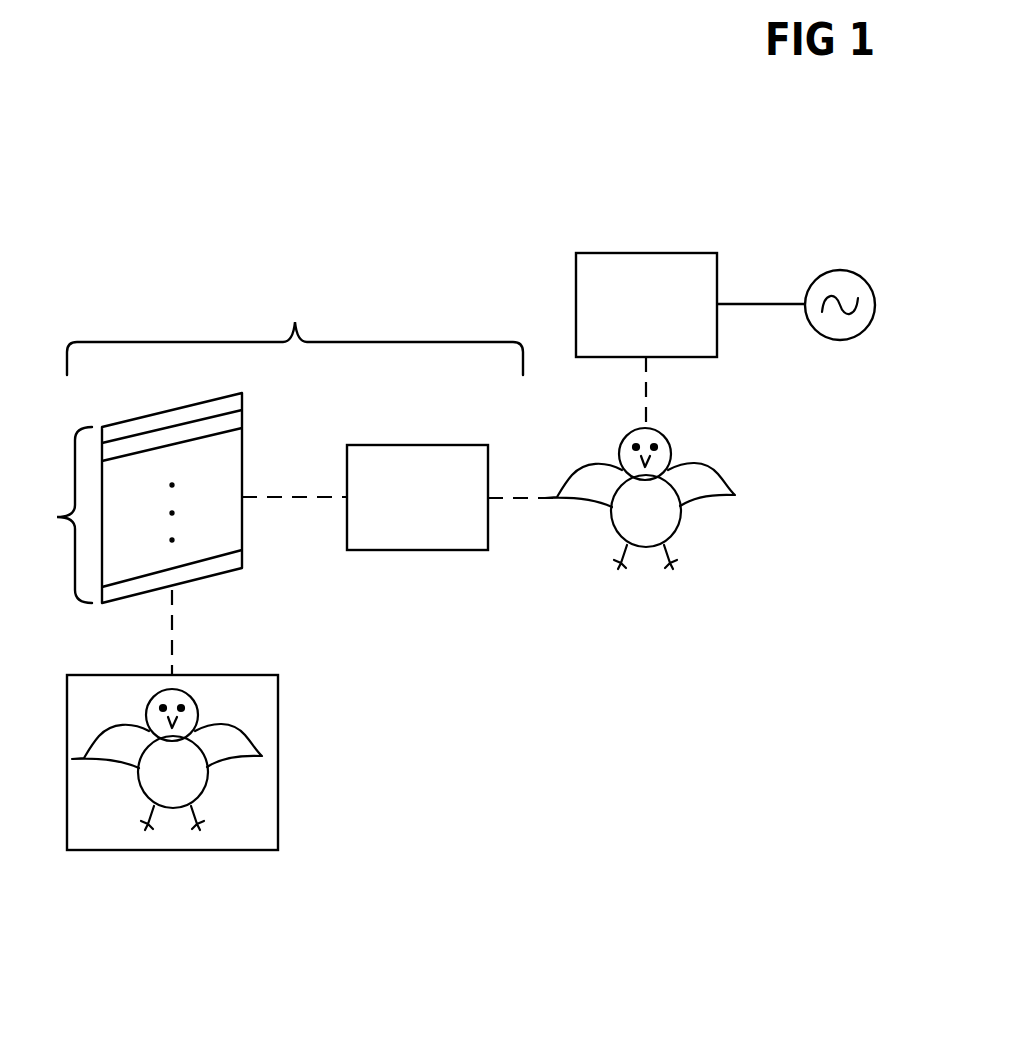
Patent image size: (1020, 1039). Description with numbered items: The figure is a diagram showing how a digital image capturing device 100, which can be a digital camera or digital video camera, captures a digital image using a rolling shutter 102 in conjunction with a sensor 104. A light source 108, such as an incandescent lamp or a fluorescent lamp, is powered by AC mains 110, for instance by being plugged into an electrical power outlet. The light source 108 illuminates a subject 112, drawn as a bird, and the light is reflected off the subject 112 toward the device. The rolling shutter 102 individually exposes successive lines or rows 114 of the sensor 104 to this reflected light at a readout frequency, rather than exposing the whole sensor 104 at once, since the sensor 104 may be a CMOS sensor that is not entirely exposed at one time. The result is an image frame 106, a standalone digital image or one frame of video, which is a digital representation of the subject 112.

The digital image capturing device 100 is at (277, 312).
The rolling shutter 102 is at (437, 536).
The sensor 104 is at (243, 440).
The image frame 106 is at (278, 706).
The light source 108 is at (665, 343).
The AC mains 110 is at (837, 268).
The subject 112 is at (735, 496).
The lines or rows 114 is at (52, 515).